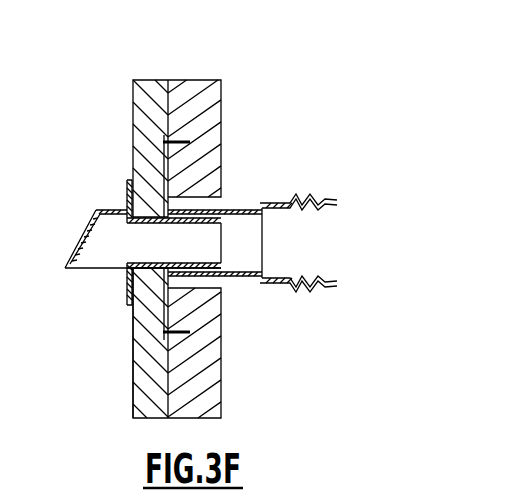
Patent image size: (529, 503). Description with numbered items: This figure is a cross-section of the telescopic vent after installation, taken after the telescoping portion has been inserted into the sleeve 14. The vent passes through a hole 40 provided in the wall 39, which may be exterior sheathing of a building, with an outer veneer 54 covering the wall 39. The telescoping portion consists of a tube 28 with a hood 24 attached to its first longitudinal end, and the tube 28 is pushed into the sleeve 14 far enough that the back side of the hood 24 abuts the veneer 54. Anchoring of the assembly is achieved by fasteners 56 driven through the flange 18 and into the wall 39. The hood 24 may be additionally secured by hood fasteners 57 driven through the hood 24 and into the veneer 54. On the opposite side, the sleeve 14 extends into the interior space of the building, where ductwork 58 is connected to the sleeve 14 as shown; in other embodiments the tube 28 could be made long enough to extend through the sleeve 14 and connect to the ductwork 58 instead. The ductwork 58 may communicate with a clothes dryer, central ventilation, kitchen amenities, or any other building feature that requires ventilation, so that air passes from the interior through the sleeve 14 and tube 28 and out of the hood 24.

The sleeve 14 is at (250, 207).
The flange 18 is at (170, 328).
The hood 24 is at (83, 237).
The tube 28 is at (188, 225).
The wall 39 is at (221, 150).
The hole 40 is at (193, 203).
The veneer 54 is at (132, 360).
The fasteners 56 is at (183, 136).
The hood fasteners 57 is at (145, 183).
The ductwork 58 is at (278, 283).